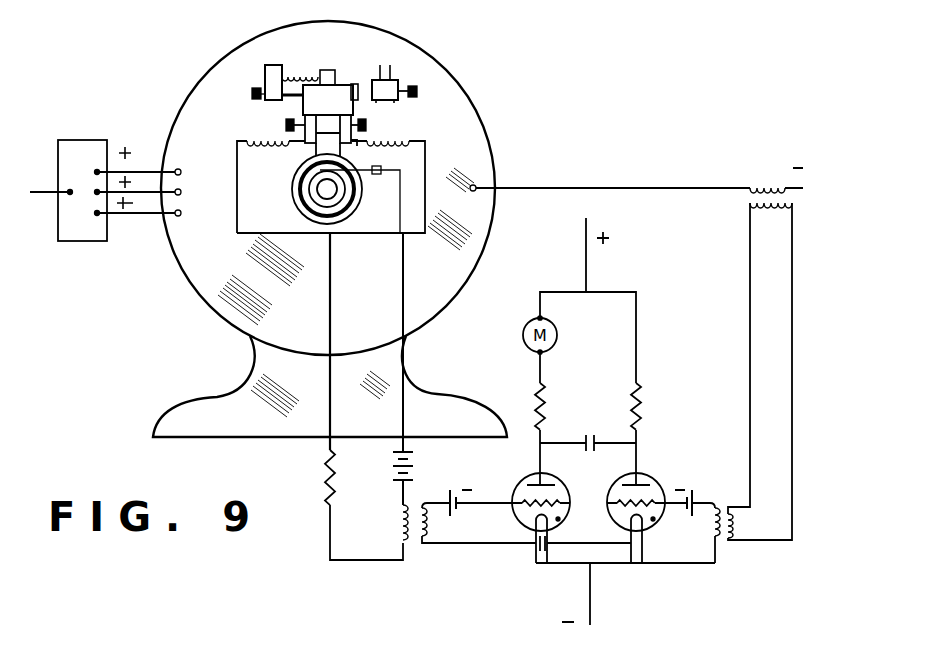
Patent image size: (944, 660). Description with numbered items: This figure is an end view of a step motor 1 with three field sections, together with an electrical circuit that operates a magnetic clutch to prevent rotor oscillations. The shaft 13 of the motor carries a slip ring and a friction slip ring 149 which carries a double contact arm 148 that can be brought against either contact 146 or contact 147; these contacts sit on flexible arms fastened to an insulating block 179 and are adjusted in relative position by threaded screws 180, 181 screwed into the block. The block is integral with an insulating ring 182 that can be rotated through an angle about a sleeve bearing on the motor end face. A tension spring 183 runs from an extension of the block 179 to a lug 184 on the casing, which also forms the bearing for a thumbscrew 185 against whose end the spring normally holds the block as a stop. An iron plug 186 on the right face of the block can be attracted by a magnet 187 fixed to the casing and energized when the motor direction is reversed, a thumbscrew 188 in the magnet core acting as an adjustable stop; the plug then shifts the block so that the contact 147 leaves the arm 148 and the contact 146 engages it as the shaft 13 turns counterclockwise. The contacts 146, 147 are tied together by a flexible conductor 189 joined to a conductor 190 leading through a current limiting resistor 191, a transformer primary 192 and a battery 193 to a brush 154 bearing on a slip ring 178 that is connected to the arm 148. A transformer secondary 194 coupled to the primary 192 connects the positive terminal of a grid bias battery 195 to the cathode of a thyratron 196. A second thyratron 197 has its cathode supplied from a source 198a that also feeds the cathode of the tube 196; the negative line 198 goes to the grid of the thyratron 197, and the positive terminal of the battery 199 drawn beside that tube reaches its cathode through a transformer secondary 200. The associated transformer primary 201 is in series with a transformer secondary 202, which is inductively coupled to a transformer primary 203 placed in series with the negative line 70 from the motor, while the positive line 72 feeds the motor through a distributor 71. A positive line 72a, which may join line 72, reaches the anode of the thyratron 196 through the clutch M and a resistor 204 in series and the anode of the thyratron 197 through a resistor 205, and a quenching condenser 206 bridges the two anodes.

The motor 1 is at (478, 142).
The shaft 13 is at (325, 192).
The negative line 70 is at (577, 188).
The distributor 71 is at (85, 242).
The positive line 72 is at (42, 192).
The positive line 72a is at (586, 226).
The contact 146 is at (308, 143).
The contact 147 is at (356, 142).
The double contact arm 148 is at (344, 150).
The friction slip ring 149 is at (352, 212).
The brush 154 is at (360, 175).
The slip ring 178 is at (317, 188).
The insulating block 179 is at (328, 100).
The threaded screw 180 is at (286, 124).
The threaded screw 181 is at (374, 118).
The insulating ring 182 is at (318, 216).
The tension spring 183 is at (296, 72).
The lug 184 is at (265, 72).
The thumbscrew 185 is at (252, 96).
The iron plug 186 is at (354, 84).
The magnet 187 is at (398, 80).
The thumbscrew 188 is at (417, 92).
The flexible conductor 189 is at (237, 184).
The conductor 190 is at (332, 325).
The current limiting resistor 191 is at (327, 484).
The transformer primary 192 is at (398, 524).
The battery 193 is at (392, 468).
The transformer secondary 194 is at (423, 546).
The grid bias battery 195 is at (451, 490).
The thyratron 196 is at (528, 478).
The thyratron 197 is at (655, 475).
The negative line 198 is at (592, 605).
The source 198a is at (548, 546).
The battery 199 is at (694, 490).
The transformer secondary 200 is at (712, 524).
The transformer primary 201 is at (735, 527).
The transformer secondary 202 is at (790, 206).
The transformer primary 203 is at (768, 186).
The resistor 204 is at (537, 412).
The resistor 205 is at (640, 412).
The quenching condenser 206 is at (592, 435).